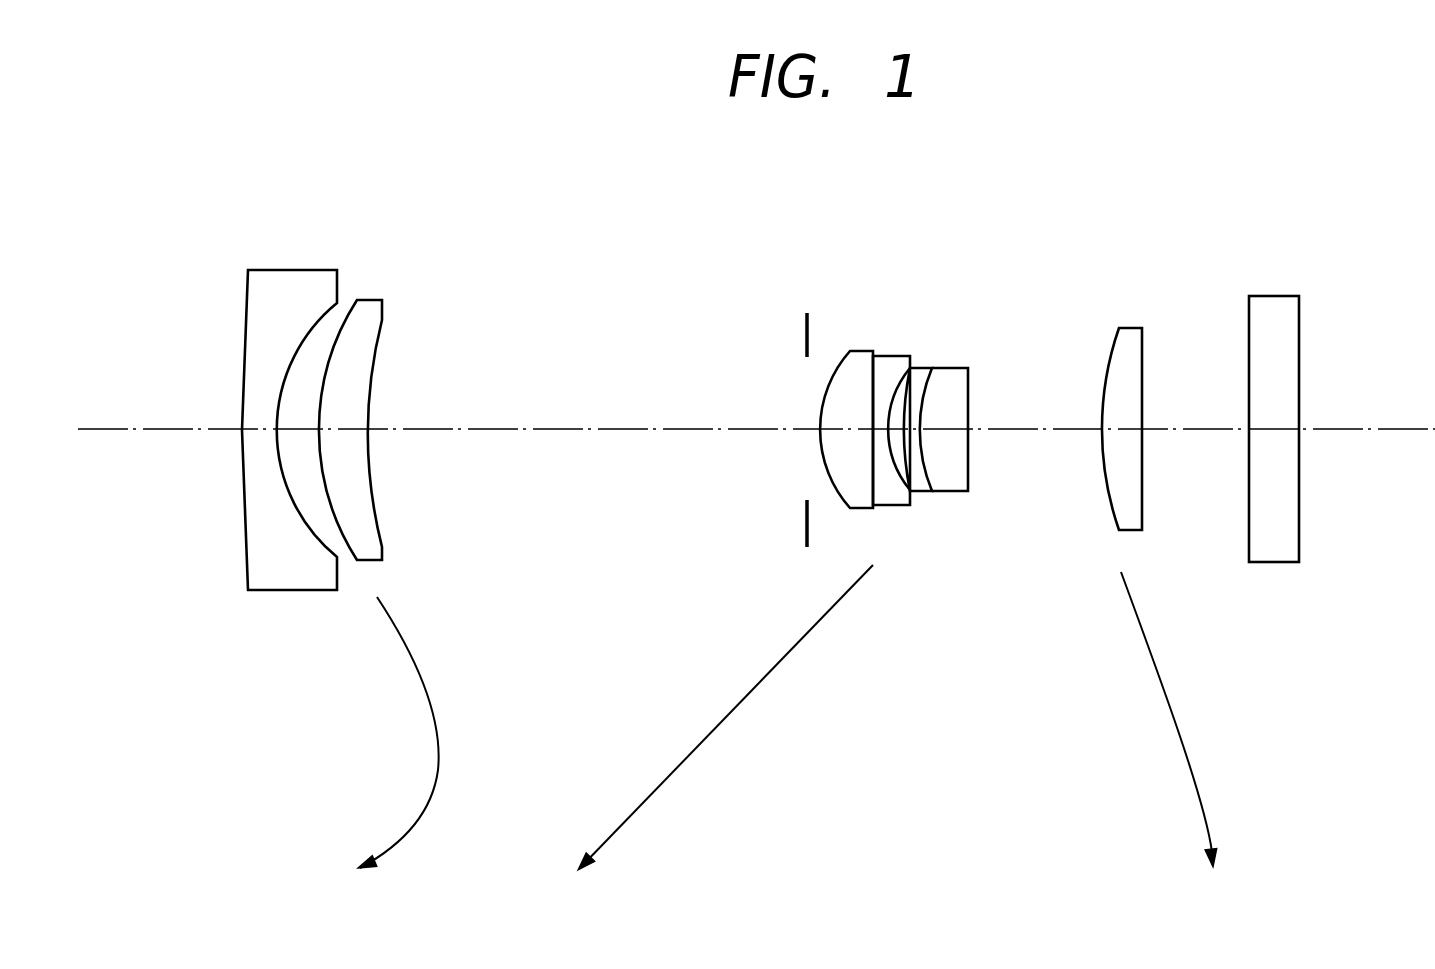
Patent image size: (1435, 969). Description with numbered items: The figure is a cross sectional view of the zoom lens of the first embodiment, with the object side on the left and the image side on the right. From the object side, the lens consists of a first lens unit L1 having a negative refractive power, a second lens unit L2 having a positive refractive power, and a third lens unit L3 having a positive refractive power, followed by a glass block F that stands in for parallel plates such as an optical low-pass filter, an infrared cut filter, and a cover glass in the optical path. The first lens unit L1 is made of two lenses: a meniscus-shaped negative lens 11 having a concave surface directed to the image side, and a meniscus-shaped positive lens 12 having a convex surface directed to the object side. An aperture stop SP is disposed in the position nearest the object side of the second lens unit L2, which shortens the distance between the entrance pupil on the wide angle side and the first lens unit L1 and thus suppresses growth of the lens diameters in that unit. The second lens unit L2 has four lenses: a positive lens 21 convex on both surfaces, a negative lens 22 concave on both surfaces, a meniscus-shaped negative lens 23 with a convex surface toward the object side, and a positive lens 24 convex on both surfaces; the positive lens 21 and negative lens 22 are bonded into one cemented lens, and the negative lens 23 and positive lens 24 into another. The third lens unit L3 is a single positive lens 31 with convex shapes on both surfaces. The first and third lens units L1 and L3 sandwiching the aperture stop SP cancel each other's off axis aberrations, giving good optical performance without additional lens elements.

The first lens unit L1 is at (397, 205).
The meniscus-shaped negative lens 11 is at (283, 268).
The meniscus-shaped positive lens 12 is at (370, 297).
The aperture stop SP is at (807, 325).
The second lens unit L2 is at (988, 272).
The positive lens 21 is at (857, 349).
The negative lens 22 is at (893, 355).
The meniscus-shaped negative lens 23 is at (928, 367).
The positive lens 24 is at (963, 367).
The third lens unit L3 is at (1174, 272).
The positive lens 31 is at (1133, 327).
The glass block F is at (1298, 322).